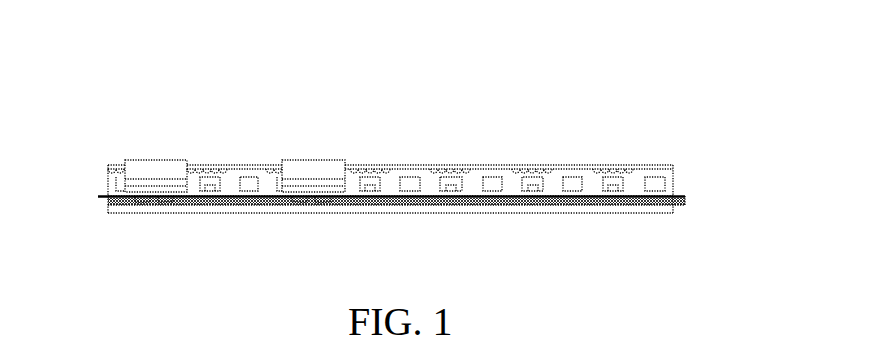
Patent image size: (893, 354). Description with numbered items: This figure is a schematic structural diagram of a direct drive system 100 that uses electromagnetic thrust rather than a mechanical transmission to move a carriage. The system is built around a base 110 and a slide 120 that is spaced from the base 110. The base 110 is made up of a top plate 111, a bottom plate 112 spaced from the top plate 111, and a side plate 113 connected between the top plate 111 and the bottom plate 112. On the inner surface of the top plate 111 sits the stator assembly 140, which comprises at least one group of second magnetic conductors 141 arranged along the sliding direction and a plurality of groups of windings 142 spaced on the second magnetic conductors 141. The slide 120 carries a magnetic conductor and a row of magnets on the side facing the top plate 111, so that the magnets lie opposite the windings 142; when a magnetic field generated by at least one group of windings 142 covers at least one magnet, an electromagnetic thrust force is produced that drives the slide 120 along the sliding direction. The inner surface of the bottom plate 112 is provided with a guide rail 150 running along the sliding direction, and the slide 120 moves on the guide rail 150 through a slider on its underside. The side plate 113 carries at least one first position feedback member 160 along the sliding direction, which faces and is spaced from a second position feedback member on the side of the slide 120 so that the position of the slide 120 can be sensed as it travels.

The direct drive system 100 is at (444, 23).
The base 110 is at (750, 110).
The top plate 111 is at (673, 167).
The bottom plate 112 is at (673, 212).
The side plate 113 is at (673, 182).
The slide 120 is at (155, 160).
The stator assembly 140 is at (610, 95).
The second magnetic conductor 141 is at (552, 168).
The winding 142 is at (465, 168).
The guide rail 150 is at (98, 197).
The first position feedback member 160 is at (452, 185).